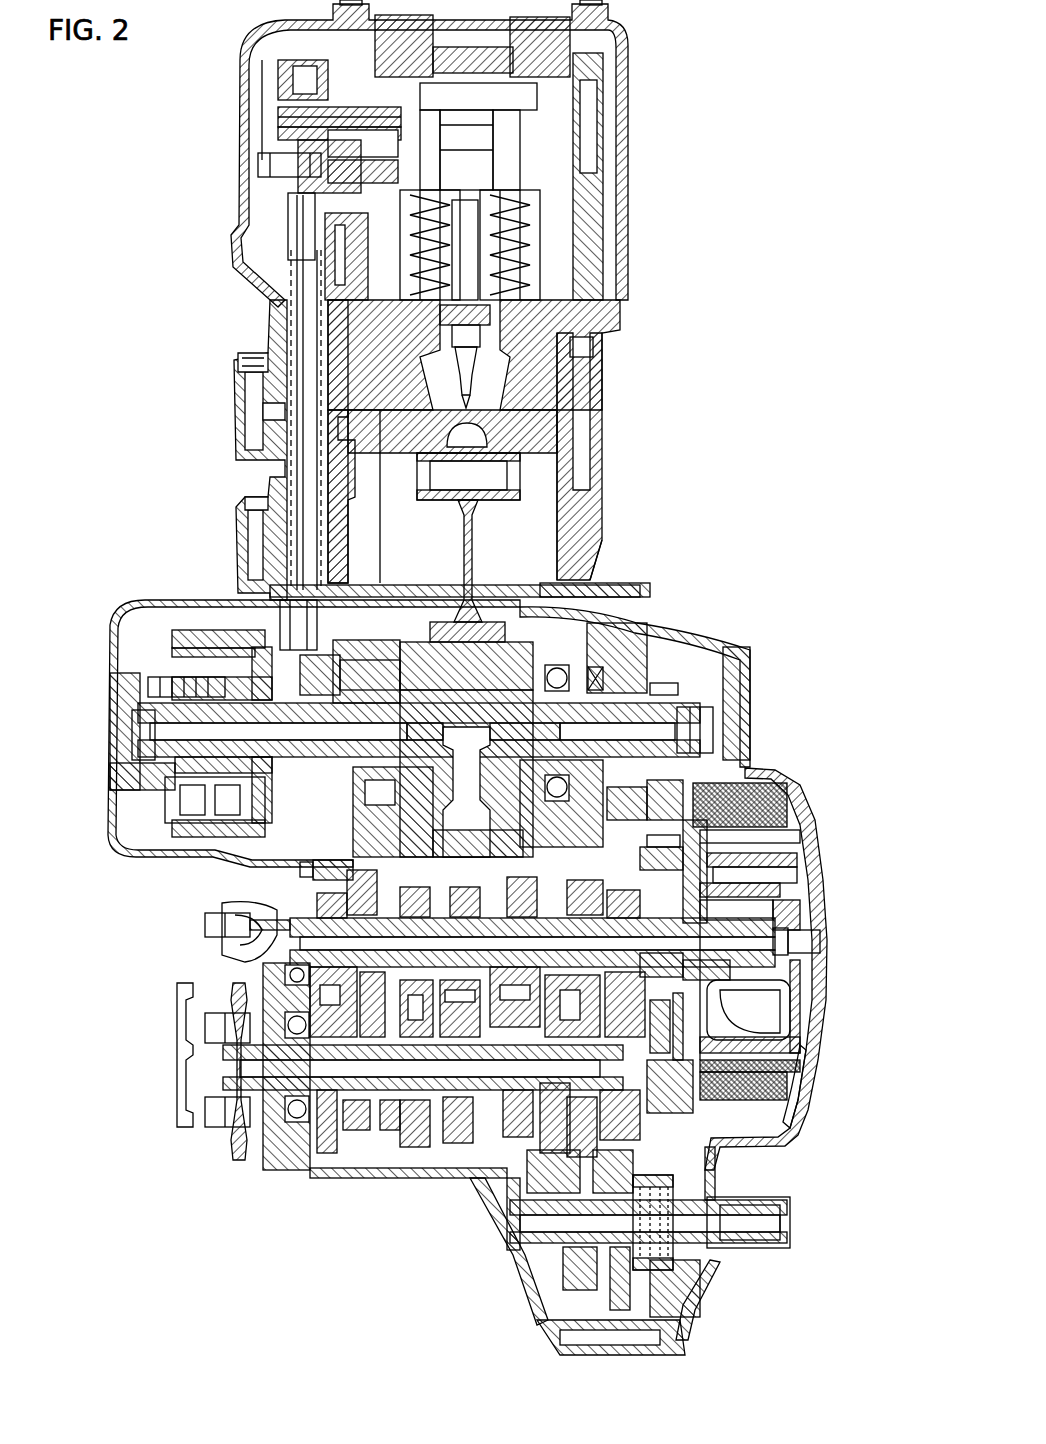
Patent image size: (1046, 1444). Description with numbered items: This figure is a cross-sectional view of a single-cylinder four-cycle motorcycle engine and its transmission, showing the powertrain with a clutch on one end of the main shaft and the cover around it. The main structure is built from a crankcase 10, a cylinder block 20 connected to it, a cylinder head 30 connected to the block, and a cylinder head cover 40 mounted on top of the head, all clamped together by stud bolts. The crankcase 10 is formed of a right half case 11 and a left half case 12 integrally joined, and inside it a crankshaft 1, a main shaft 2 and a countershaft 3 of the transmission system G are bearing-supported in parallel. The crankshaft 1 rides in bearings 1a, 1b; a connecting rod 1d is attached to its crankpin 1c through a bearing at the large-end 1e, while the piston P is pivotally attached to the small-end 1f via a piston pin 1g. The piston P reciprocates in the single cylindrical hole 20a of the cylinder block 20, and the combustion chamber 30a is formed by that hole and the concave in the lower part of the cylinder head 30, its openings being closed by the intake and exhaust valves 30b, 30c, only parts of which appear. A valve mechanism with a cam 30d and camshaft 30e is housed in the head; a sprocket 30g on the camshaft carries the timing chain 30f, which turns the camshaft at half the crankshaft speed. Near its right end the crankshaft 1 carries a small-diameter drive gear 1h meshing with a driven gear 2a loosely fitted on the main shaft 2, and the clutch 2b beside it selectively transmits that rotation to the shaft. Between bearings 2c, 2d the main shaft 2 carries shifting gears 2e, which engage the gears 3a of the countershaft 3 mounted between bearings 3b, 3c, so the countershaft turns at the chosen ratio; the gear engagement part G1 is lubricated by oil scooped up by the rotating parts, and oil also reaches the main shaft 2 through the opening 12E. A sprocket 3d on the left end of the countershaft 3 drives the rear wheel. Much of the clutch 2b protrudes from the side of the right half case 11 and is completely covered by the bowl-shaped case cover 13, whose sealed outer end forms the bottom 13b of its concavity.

The cylinder head cover 40 is at (215, 150).
The cylinder head 30 is at (215, 322).
The combustion chamber 30a is at (470, 400).
The intake valve 30b is at (490, 290).
The exhaust valve 30c is at (470, 260).
The cam 30d is at (505, 150).
The camshaft 30e is at (477, 125).
The timing chain 30f is at (300, 300).
The sprocket 30g is at (300, 210).
The cylinder block 20 is at (215, 470).
The cylindrical hole 20a is at (405, 520).
The piston P is at (540, 398).
The piston pin 1g is at (565, 420).
The small-end 1f is at (500, 470).
The connecting rod 1d is at (478, 575).
The large-end 1e is at (480, 630).
The crankpin 1c is at (520, 650).
The bearing 1a is at (560, 670).
The bearing 1b is at (340, 675).
The gear 1h is at (660, 690).
The crankshaft 1 is at (260, 780).
The crankcase 10 is at (310, 880).
The main shaft 2 is at (340, 975).
The driven gear 2a is at (680, 780).
The clutch 2b is at (780, 830).
The bearing 2c is at (690, 830).
The bearing 2d is at (310, 1020).
The gears for shifting 2e is at (320, 930).
The opening 12E is at (300, 950).
The half case 12 is at (400, 1168).
The countershaft 3 is at (290, 1080).
The gears 3a is at (360, 1168).
The bearing 3b is at (525, 1170).
The bearing 3c is at (275, 1165).
The sprocket 3d is at (233, 1165).
The transmission system G is at (455, 1185).
The gear engagement part G1 is at (435, 1168).
The half case 11 is at (490, 1175).
The case cover 13 is at (800, 1115).
The bottom 13b is at (790, 1050).